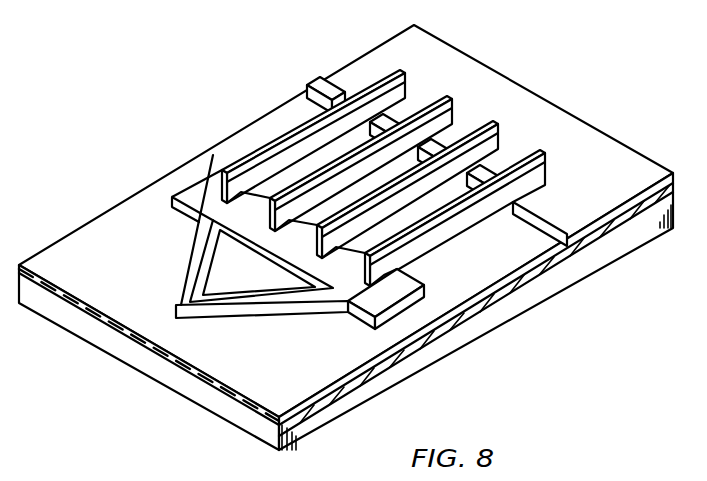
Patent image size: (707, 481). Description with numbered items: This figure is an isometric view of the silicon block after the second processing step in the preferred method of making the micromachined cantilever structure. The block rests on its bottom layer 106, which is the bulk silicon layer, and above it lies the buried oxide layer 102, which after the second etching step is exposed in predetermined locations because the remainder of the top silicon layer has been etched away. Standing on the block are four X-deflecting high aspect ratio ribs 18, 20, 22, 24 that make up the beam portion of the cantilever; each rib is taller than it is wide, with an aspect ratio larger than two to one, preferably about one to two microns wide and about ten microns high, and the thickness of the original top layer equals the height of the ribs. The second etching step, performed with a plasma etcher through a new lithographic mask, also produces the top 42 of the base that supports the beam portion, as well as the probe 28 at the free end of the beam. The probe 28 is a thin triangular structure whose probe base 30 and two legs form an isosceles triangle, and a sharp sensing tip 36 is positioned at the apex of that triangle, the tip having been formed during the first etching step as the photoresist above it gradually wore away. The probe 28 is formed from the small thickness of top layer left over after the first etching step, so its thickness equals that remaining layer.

The X-deflecting high aspect ratio rib 18 is at (245, 143).
The X-deflecting high aspect ratio rib 20 is at (447, 116).
The X-deflecting high aspect ratio rib 22 is at (490, 147).
The X-deflecting high aspect ratio rib 24 is at (540, 175).
The top of base 42 is at (347, 78).
The probe 28 is at (319, 326).
The probe base 30 is at (199, 192).
The sensing tip 36 is at (188, 280).
The buried oxide layer 102 is at (400, 348).
The bottom layer 106 is at (481, 320).